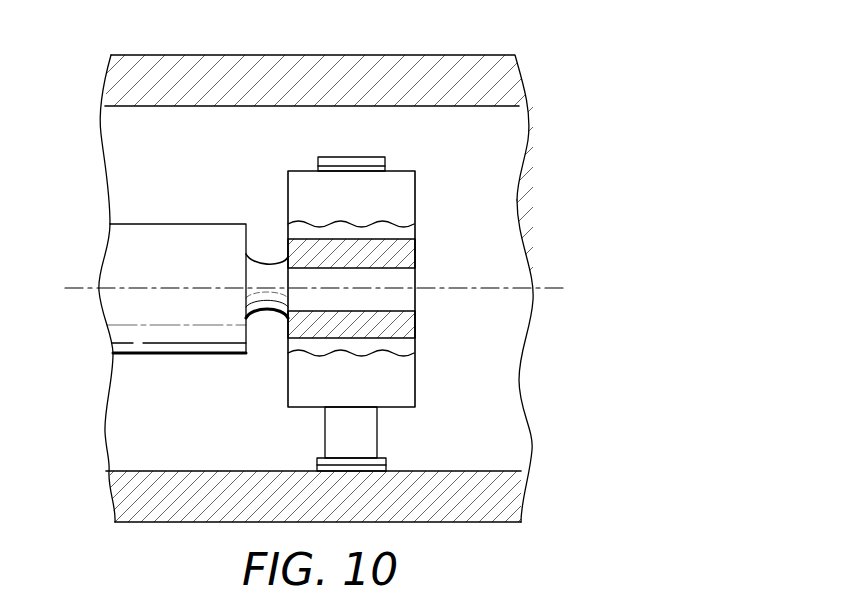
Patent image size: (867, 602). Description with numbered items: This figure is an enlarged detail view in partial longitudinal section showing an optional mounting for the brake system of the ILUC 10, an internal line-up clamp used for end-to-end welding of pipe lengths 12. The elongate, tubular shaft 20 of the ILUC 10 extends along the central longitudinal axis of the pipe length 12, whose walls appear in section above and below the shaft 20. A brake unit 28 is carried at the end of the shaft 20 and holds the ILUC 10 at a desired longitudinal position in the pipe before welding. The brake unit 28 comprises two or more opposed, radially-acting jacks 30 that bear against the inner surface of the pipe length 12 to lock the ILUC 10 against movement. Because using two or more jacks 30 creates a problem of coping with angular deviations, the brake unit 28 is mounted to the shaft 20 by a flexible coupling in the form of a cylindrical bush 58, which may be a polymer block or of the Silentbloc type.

The ILUC 10 is at (90, 238).
The pipe length 12 is at (450, 67).
The shaft 20 is at (200, 347).
The brake unit 28 is at (405, 189).
The jack 30 is at (317, 161).
The cylindrical bush 58 is at (405, 325).